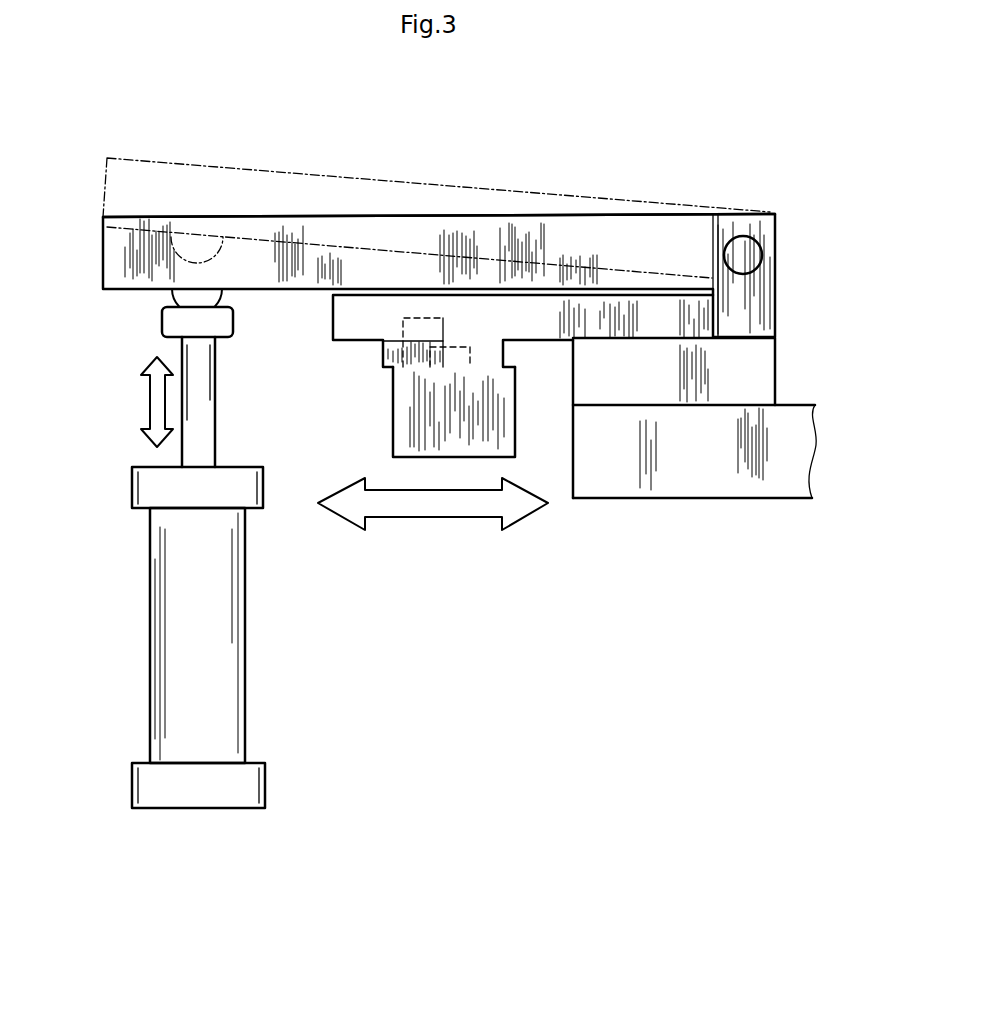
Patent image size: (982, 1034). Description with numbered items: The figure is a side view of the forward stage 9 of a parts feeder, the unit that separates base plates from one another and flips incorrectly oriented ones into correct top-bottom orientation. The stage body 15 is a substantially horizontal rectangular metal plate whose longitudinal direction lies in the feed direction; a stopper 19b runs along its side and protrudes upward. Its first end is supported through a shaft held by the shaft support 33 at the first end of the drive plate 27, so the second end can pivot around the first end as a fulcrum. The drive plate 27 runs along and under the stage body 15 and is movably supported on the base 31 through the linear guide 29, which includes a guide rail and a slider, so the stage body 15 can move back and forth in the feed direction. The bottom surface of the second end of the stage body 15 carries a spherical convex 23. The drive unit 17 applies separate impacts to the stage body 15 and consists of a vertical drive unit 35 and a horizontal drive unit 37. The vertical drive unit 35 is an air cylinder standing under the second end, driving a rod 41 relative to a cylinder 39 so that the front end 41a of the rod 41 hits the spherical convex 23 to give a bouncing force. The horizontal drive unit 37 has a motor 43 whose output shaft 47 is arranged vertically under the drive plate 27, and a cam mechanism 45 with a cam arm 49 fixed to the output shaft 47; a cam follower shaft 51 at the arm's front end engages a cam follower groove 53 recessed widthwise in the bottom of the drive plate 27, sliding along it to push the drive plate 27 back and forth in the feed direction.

The forward stage 9 is at (677, 144).
The stage body 15 is at (471, 207).
The stopper 19b is at (596, 213).
The drive unit 17 is at (323, 779).
The spherical convex 23 is at (175, 294).
The drive plate 27 is at (700, 313).
The linear guide 29 is at (762, 376).
The base 31 is at (800, 455).
The shaft support 33 is at (777, 258).
The vertical drive unit 35 is at (201, 819).
The horizontal drive unit 37 is at (546, 531).
The cylinder 39 is at (245, 640).
The rod 41 is at (215, 415).
The front end of rod 41a is at (162, 322).
The motor 43 is at (408, 401).
The cam mechanism 45 is at (367, 363).
The output shaft 47 is at (470, 350).
The cam arm 49 is at (390, 340).
The cam follower shaft 51 is at (443, 320).
The cam follower groove 53 is at (403, 318).